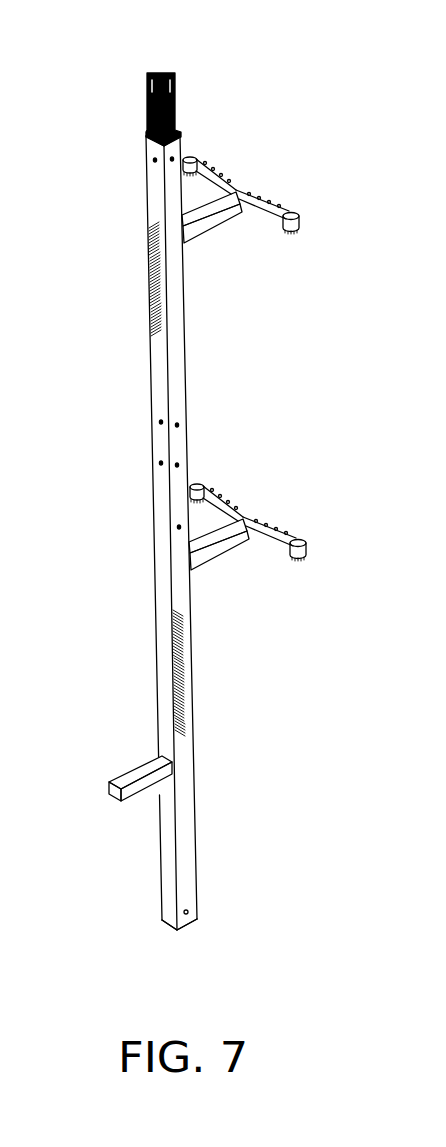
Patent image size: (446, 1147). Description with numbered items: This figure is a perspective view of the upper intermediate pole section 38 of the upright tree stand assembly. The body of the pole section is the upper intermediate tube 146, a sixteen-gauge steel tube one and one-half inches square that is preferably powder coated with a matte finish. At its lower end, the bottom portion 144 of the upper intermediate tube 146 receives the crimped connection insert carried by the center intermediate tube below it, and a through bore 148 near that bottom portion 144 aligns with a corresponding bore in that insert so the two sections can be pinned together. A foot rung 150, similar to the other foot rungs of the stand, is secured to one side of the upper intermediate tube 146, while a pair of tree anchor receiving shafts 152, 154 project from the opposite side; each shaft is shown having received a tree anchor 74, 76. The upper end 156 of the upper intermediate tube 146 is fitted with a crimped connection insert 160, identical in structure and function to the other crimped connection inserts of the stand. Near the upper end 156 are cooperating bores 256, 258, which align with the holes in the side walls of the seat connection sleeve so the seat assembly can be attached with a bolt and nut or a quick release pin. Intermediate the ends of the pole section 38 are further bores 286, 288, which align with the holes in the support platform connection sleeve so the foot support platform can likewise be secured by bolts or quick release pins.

The upper intermediate pole section 38 is at (286, 391).
The upper intermediate tube 146 is at (216, 663).
The bottom portion 144 is at (187, 930).
The through bore 148 is at (187, 911).
The stop bar 150 is at (135, 773).
The tree anchor receiving shaft 152 is at (212, 550).
The tree anchor receiving shaft 154 is at (210, 220).
The upper end 156 is at (177, 142).
The crimped connection insert 160 is at (175, 105).
The cooperating bore 256 is at (174, 158).
The cooperating bore 258 is at (150, 158).
The bore 286 is at (177, 425).
The bore 288 is at (177, 464).
The tree anchor 74 is at (279, 519).
The tree anchor 76 is at (272, 511).